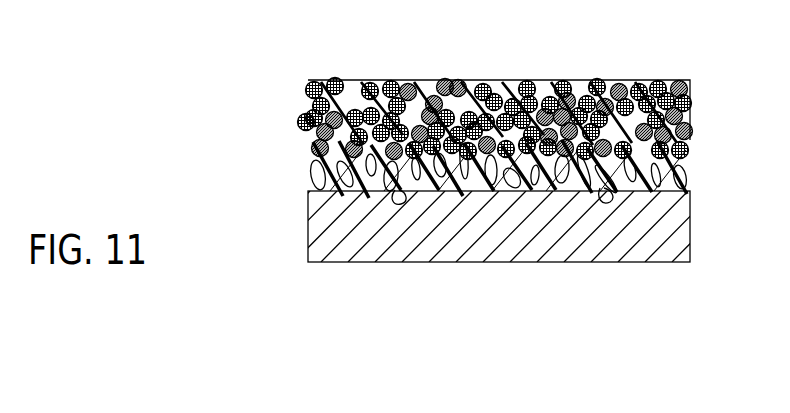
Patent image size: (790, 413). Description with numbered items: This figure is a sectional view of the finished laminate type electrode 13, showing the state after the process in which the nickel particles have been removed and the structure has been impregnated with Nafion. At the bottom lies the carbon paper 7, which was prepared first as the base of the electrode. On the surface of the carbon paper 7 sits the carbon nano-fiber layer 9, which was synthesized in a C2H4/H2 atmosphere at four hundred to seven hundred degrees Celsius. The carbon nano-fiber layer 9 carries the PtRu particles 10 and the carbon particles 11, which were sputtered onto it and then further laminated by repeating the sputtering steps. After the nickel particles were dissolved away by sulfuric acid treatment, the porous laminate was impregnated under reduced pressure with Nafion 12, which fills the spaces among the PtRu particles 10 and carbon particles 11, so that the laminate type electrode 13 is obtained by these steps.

The carbon paper 7 is at (310, 230).
The carbon nano-fiber layer 9 is at (312, 158).
The PtRu particles 10 is at (460, 83).
The carbon particles 11 is at (681, 82).
The Nafion 12 is at (529, 82).
The laminate type electrode 13 is at (467, 94).